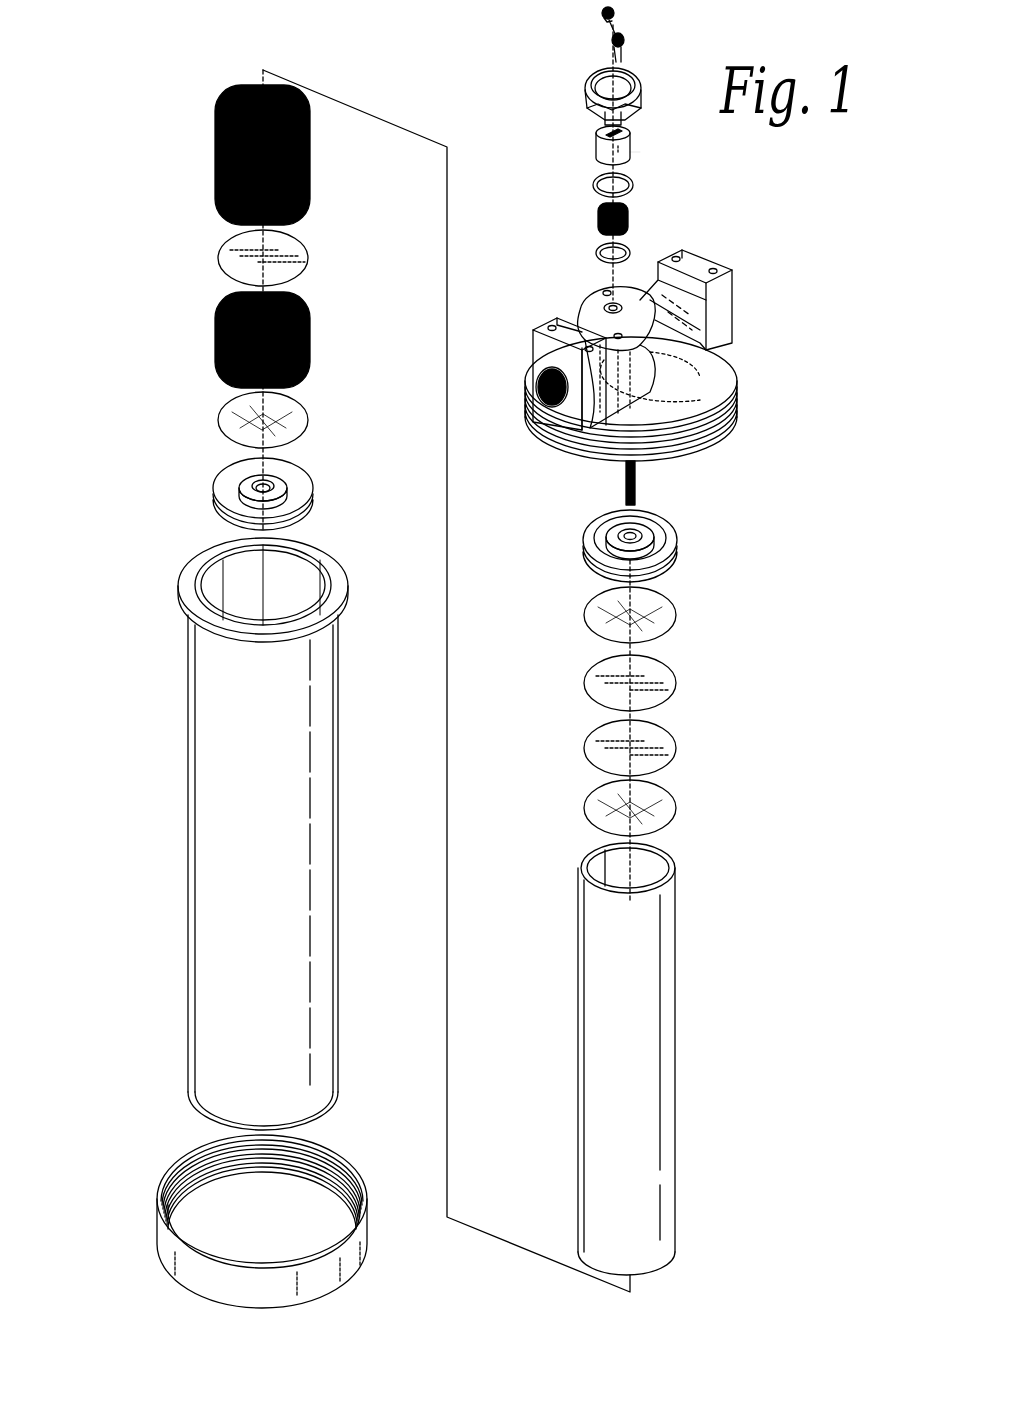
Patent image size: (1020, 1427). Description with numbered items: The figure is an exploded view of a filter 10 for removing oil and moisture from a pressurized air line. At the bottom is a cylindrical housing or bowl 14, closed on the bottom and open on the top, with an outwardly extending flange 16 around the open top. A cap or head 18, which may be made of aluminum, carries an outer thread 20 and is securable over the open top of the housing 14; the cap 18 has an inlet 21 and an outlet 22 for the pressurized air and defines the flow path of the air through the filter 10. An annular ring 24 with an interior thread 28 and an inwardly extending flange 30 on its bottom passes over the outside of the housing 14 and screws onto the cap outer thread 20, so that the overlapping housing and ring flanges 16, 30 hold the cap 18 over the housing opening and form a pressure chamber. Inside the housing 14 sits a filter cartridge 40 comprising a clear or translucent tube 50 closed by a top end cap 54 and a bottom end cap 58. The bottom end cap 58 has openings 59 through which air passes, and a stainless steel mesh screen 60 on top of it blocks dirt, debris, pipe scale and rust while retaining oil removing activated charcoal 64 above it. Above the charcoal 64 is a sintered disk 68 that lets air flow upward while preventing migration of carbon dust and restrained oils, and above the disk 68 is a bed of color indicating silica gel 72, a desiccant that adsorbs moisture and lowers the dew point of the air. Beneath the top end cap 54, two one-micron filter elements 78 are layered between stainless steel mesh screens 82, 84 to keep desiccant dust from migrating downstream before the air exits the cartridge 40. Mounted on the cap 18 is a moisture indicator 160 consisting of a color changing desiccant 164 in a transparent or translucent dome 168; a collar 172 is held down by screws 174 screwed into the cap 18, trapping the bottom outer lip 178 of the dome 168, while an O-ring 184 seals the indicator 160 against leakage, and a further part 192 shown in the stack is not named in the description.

The filter 10 is at (112, 779).
The housing or bowl 14 is at (263, 837).
The flange 16 is at (180, 588).
The cap or head 18 is at (632, 340).
The outer thread 20 is at (733, 422).
The inlet 21 is at (536, 423).
The outlet 22 is at (755, 303).
The annular ring 24 is at (158, 1238).
The interior thread 28 is at (330, 1150).
The inwardly extending flange 30 is at (188, 1208).
The filter cartridge 40 is at (730, 968).
The tube 50 is at (626, 1059).
The top end cap 54 is at (670, 542).
The bottom end cap 58 is at (222, 485).
The openings 59 is at (285, 482).
The stainless steel mesh screen 60 is at (218, 423).
The activated charcoal 64 is at (216, 350).
The sintered disk 68 is at (218, 260).
The color indicating silica gel 72 is at (215, 160).
The filter elements 78 is at (662, 748).
The mesh screen 82 is at (670, 800).
The mesh screen 84 is at (668, 608).
The moisture indicator 160 is at (712, 189).
The color changing desiccant 164 is at (635, 228).
The dome or housing 168 is at (595, 150).
The collar 172 is at (590, 98).
The screws 174 is at (624, 40).
The bottom outer lip 178 is at (631, 155).
The O-ring 184 is at (595, 188).
The O-ring 192 is at (597, 258).